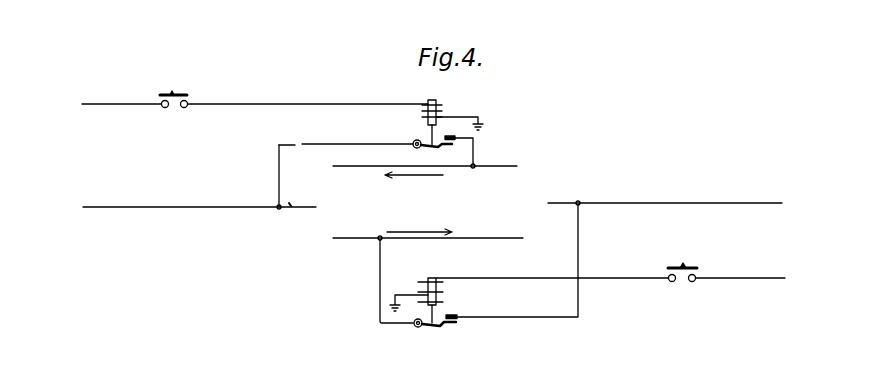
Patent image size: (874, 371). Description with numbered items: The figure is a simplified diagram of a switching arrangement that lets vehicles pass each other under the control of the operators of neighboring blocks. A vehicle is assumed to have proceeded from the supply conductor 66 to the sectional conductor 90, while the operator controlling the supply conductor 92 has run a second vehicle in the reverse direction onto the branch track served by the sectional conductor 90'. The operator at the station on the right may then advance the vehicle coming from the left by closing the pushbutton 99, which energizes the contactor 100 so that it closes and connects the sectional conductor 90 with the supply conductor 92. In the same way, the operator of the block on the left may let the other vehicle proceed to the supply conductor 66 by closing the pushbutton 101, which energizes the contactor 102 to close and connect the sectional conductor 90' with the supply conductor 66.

The supply conductor 66 is at (171, 209).
The sectional conductor 90 is at (428, 223).
The sectional conductor 90' is at (428, 158).
The supply conductor 92 is at (719, 201).
The pushbutton 99 is at (684, 263).
The contactor 100 is at (437, 330).
The pushbutton 101 is at (173, 91).
The contactor 102 is at (427, 121).